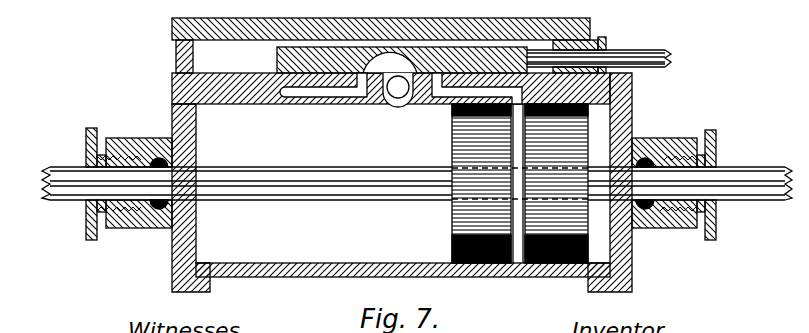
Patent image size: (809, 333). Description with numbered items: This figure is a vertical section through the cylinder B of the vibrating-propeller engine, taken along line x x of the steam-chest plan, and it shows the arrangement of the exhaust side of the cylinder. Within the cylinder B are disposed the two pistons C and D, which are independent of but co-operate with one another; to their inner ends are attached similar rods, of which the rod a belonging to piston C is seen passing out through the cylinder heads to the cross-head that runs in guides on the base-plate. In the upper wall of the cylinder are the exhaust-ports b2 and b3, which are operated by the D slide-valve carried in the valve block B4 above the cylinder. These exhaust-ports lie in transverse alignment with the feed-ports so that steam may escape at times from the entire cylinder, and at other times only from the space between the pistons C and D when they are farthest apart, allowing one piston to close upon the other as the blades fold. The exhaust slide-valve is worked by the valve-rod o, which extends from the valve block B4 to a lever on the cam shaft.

The piston rod a is at (417, 183).
The cylinder B is at (401, 155).
The valve block B4 is at (402, 77).
The exhaust-port b2 is at (282, 98).
The exhaust-port b3 is at (452, 90).
The piston C is at (487, 183).
The piston D is at (556, 183).
The valve-rod o is at (599, 54).